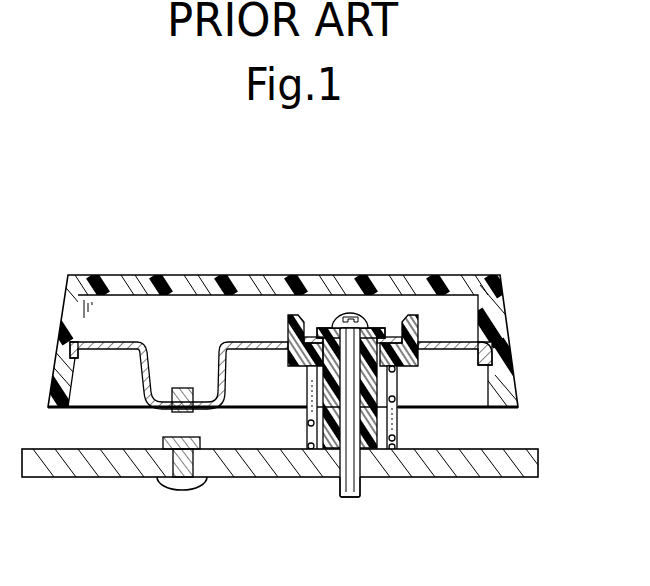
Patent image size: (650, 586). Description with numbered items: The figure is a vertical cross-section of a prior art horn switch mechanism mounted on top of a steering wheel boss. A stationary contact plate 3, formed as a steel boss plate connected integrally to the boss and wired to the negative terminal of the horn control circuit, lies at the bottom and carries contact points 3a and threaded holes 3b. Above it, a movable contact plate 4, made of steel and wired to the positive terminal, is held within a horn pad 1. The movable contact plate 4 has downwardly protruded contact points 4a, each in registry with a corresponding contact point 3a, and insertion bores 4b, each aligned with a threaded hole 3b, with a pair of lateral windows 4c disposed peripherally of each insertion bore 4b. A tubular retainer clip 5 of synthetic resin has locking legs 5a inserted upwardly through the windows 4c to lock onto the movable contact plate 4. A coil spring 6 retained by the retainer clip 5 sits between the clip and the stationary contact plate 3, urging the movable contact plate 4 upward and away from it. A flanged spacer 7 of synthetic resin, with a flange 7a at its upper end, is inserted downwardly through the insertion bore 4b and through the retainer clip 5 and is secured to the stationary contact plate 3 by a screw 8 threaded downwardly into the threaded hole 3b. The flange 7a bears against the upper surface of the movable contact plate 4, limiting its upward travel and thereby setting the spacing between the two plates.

The horn pad 1 is at (58, 304).
The stationary contact plate 3 is at (540, 463).
The contact points 3a is at (175, 490).
The threaded holes 3b is at (347, 497).
The movable contact plate 4 is at (470, 348).
The contact points 4a is at (182, 388).
The insertion bores 4b is at (325, 336).
The lateral bores or windows 4c is at (287, 337).
The retainer clip 5 is at (394, 379).
The locking legs 5a is at (294, 313).
The coil spring 6 is at (308, 430).
The flanged spacer 7 is at (327, 448).
The flange 7a is at (379, 332).
The screw 8 is at (355, 312).